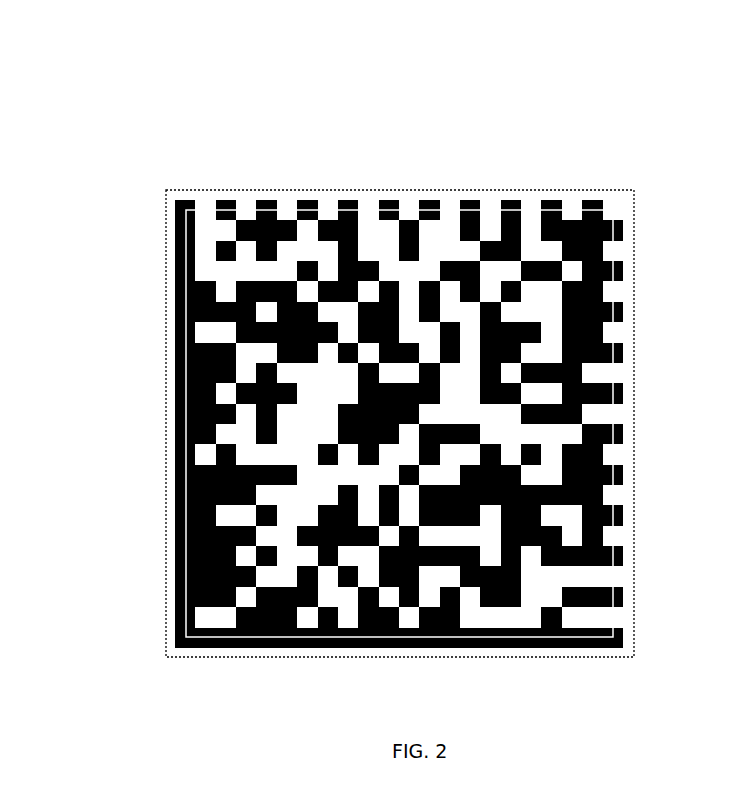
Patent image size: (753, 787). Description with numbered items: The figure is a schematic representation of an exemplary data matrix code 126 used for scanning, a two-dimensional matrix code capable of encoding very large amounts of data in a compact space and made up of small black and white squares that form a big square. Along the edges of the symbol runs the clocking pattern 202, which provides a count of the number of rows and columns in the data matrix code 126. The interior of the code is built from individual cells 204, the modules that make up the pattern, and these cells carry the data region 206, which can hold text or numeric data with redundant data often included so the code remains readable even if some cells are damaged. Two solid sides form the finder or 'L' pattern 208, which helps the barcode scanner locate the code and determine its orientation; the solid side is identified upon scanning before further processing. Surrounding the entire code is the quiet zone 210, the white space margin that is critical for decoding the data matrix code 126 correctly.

The data matrix code 126 is at (361, 372).
The clocking pattern 202 is at (452, 213).
The cell 204 is at (385, 280).
The data region 206 is at (623, 427).
The finder or 'L' pattern 208 is at (148, 420).
The quiet zone 210 is at (622, 537).